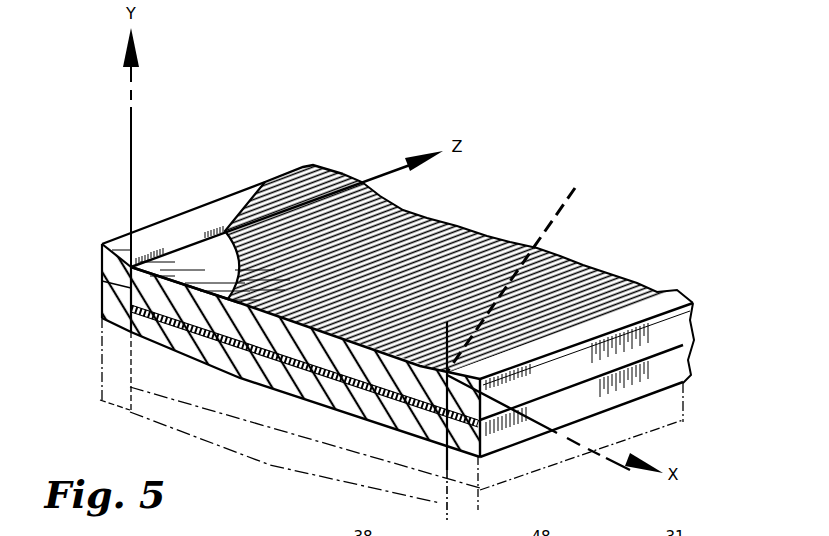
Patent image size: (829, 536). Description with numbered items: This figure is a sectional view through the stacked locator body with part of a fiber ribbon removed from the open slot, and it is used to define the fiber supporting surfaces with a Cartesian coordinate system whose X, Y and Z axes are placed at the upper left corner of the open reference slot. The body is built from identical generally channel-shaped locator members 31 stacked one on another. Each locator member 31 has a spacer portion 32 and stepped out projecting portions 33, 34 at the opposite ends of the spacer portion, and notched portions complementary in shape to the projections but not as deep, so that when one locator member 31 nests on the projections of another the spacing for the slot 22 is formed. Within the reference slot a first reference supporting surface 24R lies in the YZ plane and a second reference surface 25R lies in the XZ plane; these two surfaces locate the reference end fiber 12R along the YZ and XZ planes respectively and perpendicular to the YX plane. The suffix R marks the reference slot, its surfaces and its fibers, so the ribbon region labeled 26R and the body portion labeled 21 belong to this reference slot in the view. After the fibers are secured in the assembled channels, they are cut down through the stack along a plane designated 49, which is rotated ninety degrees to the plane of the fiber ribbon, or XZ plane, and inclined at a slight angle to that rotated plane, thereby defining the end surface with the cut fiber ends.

The recording medium body 21 is at (287, 168).
The slot 22 is at (112, 396).
The reference end fiber 12R is at (350, 180).
The first reference supporting surface 24R is at (196, 228).
The second reference surface 25R is at (221, 250).
The grooved surface region 26R is at (480, 238).
The locator member 31 is at (503, 440).
The spacer portion 32 is at (133, 280).
The projecting portion 33 is at (117, 272).
The projecting portion 34 is at (490, 390).
The cutting plane 49 is at (560, 222).